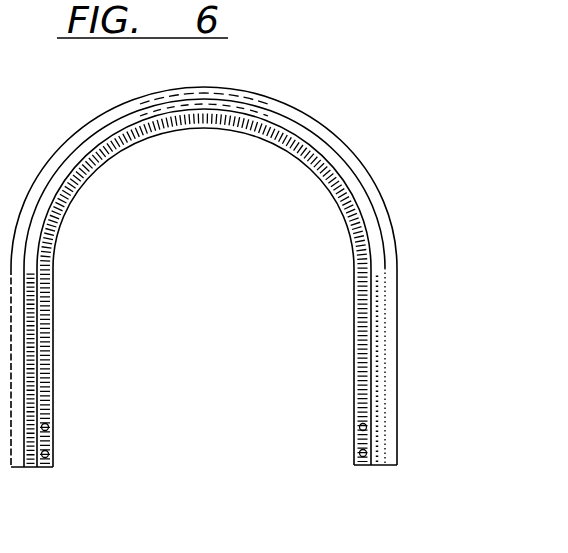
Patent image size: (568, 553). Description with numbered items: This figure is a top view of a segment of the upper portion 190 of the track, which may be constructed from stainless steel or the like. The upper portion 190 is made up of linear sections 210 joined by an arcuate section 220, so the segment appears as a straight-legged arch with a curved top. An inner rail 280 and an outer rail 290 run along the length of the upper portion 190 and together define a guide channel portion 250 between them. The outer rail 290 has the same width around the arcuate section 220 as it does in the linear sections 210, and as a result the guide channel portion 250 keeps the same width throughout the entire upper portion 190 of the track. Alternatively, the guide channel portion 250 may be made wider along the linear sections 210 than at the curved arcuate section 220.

The upper portion 190 is at (222, 82).
The linear sections 210 is at (53, 392).
The arcuate section 220 is at (155, 95).
The guide channel portion 250 is at (297, 130).
The inner rail 280 is at (358, 232).
The outer rail 290 is at (408, 203).